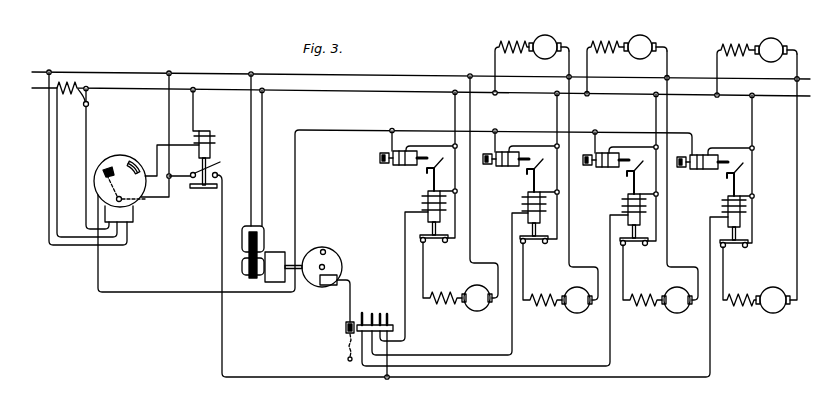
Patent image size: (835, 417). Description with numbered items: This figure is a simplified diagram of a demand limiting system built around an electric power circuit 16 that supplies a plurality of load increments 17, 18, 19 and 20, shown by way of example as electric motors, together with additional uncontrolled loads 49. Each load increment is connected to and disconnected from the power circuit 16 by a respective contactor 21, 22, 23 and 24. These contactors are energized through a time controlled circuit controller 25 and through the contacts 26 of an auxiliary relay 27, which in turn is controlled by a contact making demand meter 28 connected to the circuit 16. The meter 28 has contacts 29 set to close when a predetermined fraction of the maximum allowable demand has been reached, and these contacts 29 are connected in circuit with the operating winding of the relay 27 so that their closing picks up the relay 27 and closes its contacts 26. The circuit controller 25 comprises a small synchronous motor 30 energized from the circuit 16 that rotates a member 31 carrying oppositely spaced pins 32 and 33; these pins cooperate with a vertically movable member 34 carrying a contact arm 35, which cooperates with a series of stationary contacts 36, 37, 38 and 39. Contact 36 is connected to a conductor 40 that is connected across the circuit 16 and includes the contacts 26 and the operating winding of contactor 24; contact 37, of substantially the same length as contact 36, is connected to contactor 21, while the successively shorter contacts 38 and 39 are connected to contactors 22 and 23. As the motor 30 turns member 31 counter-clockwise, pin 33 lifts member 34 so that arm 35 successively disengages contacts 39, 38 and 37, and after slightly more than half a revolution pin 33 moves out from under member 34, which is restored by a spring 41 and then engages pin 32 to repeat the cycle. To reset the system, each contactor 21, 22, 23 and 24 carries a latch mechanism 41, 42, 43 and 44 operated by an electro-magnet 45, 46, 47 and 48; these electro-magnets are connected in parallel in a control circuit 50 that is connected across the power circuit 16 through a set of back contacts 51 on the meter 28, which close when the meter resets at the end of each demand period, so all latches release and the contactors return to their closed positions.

The electric power circuit 16 is at (117, 88).
The load increment 17 is at (477, 311).
The load increment 18 is at (577, 313).
The load increment 19 is at (677, 313).
The load increment 20 is at (773, 313).
The contactor 21 is at (422, 198).
The contactor 22 is at (522, 199).
The contactor 23 is at (622, 201).
The contactor 24 is at (722, 203).
The time controlled circuit controller 25 is at (283, 283).
The contacts 26 is at (221, 165).
The auxiliary relay 27 is at (202, 130).
The contact making demand meter 28 is at (138, 205).
The contacts 29 is at (130, 164).
The synchronous motor 30 is at (271, 240).
The member 31 is at (342, 261).
The pin 32 is at (326, 250).
The pin 33 is at (323, 286).
The vertically movable member 34 is at (351, 288).
The contact arm 35 is at (346, 328).
The stationary contact 36 is at (394, 325).
The stationary contact 37 is at (384, 314).
The stationary contact 38 is at (372, 314).
The stationary contact 39 is at (490, 290).
The conductor 40 is at (341, 378).
The latch mechanism 41 is at (435, 167).
The latch mechanism 42 is at (535, 168).
The latch mechanism 43 is at (635, 170).
The latch mechanism 44 is at (735, 172).
The electro-magnet 45 is at (399, 171).
The electro-magnet 46 is at (505, 172).
The electro-magnet 47 is at (605, 173).
The electro-magnet 48 is at (703, 175).
The uncontrolled loads 49 is at (631, 36).
The control circuit 50 is at (295, 187).
The back contacts 51 is at (107, 169).